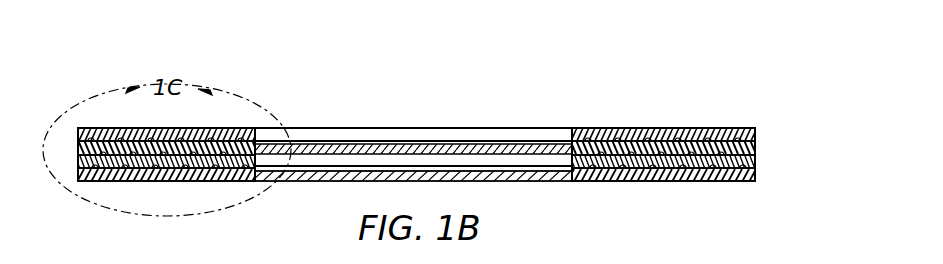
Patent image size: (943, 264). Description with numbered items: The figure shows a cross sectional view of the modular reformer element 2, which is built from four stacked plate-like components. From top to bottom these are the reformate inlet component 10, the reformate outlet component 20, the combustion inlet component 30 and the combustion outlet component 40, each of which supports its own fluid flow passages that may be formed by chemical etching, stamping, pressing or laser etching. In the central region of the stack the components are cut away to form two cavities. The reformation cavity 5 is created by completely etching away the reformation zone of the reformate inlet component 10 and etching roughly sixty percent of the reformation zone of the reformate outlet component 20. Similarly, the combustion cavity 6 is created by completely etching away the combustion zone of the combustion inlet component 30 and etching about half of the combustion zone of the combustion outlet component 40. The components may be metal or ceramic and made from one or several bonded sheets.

The modular reformer element 2 is at (451, 140).
The reformation cavity 5 is at (508, 133).
The combustion cavity 6 is at (384, 160).
The reformate inlet component 10 is at (757, 131).
The reformate outlet component 20 is at (577, 144).
The combustion inlet component 30 is at (757, 160).
The combustion outlet component 40 is at (683, 168).